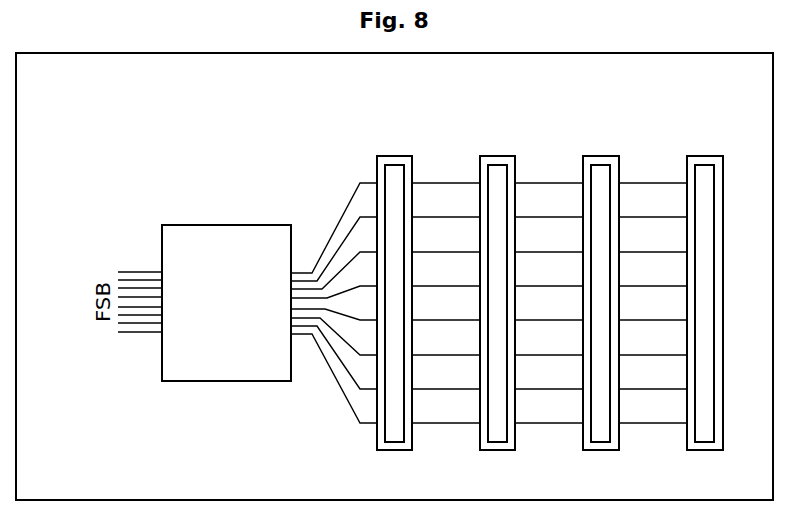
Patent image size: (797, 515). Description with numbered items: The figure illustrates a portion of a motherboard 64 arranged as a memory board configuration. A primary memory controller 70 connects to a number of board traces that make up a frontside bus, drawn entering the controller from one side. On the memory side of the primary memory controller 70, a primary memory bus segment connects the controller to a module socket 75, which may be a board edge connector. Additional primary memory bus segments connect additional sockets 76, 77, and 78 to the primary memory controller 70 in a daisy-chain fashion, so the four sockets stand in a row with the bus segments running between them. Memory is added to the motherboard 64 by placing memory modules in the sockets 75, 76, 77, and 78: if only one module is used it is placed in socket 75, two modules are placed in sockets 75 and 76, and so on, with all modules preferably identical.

The motherboard 64 is at (113, 478).
The primary memory controller 70 is at (213, 345).
The module socket 75 is at (395, 157).
The module socket 76 is at (498, 157).
The module socket 77 is at (601, 157).
The module socket 78 is at (705, 157).